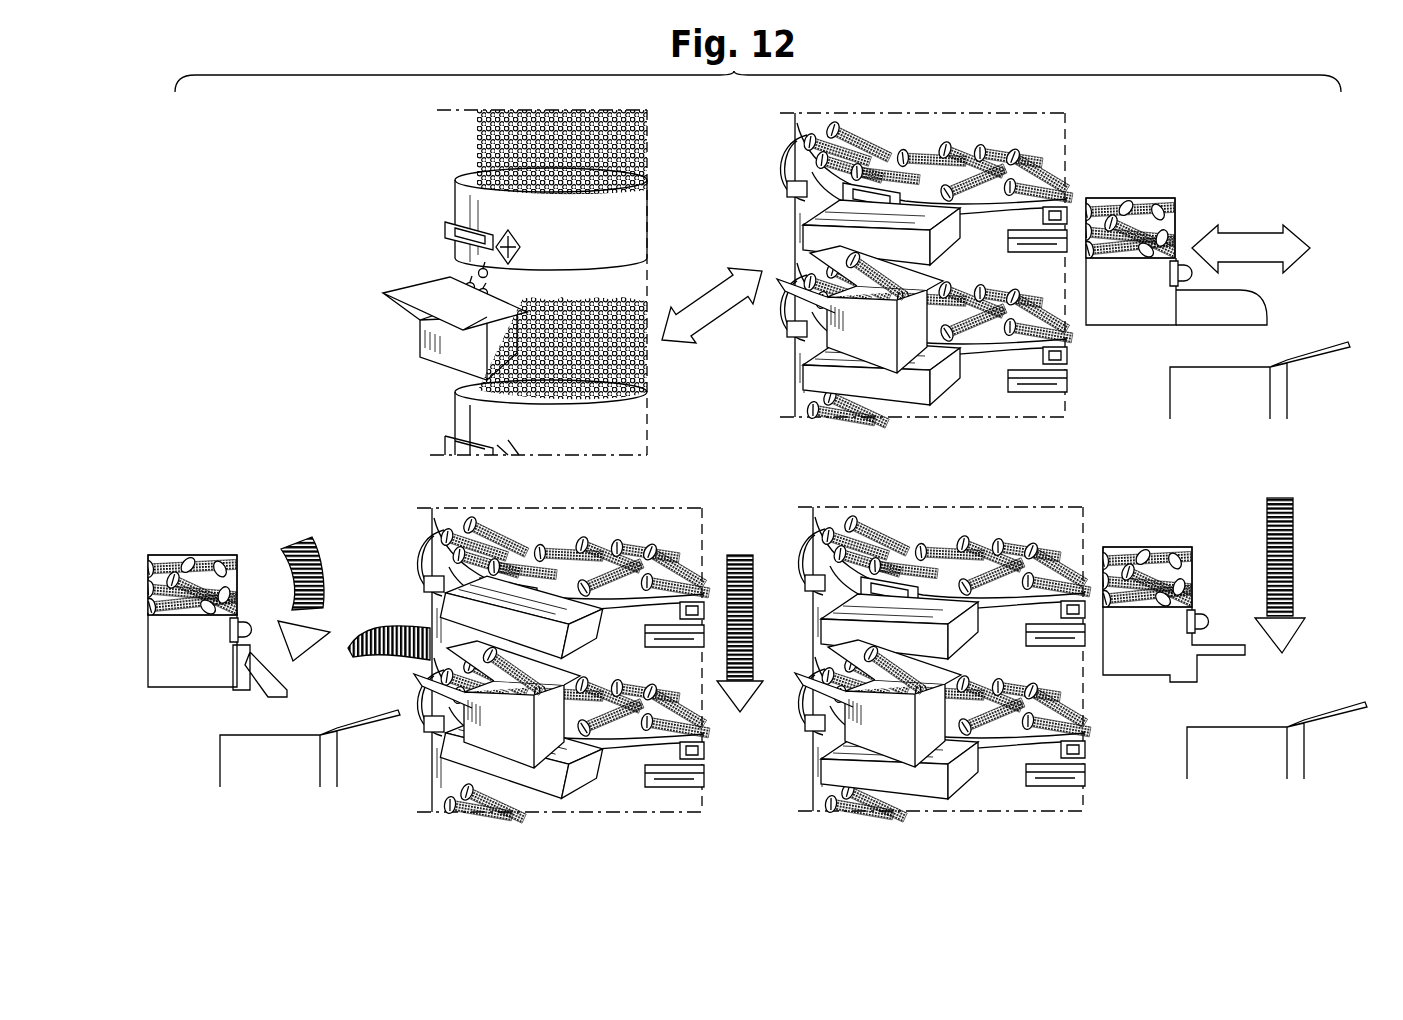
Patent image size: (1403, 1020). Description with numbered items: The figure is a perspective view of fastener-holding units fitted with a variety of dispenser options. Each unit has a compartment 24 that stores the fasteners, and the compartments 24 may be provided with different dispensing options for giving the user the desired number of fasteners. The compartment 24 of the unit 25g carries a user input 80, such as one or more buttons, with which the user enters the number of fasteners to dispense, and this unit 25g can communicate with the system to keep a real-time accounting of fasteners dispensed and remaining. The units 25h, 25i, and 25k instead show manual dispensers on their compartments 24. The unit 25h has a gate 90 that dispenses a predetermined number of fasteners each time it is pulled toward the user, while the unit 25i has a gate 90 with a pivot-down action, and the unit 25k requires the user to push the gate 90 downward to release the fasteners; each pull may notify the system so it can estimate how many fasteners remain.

The compartment 24 is at (617, 185).
The unit 25g is at (432, 164).
The unit 25h is at (1078, 181).
The unit 25i is at (222, 553).
The unit 25k is at (786, 544).
The user input 80 is at (465, 247).
The gate 90 is at (1183, 258).